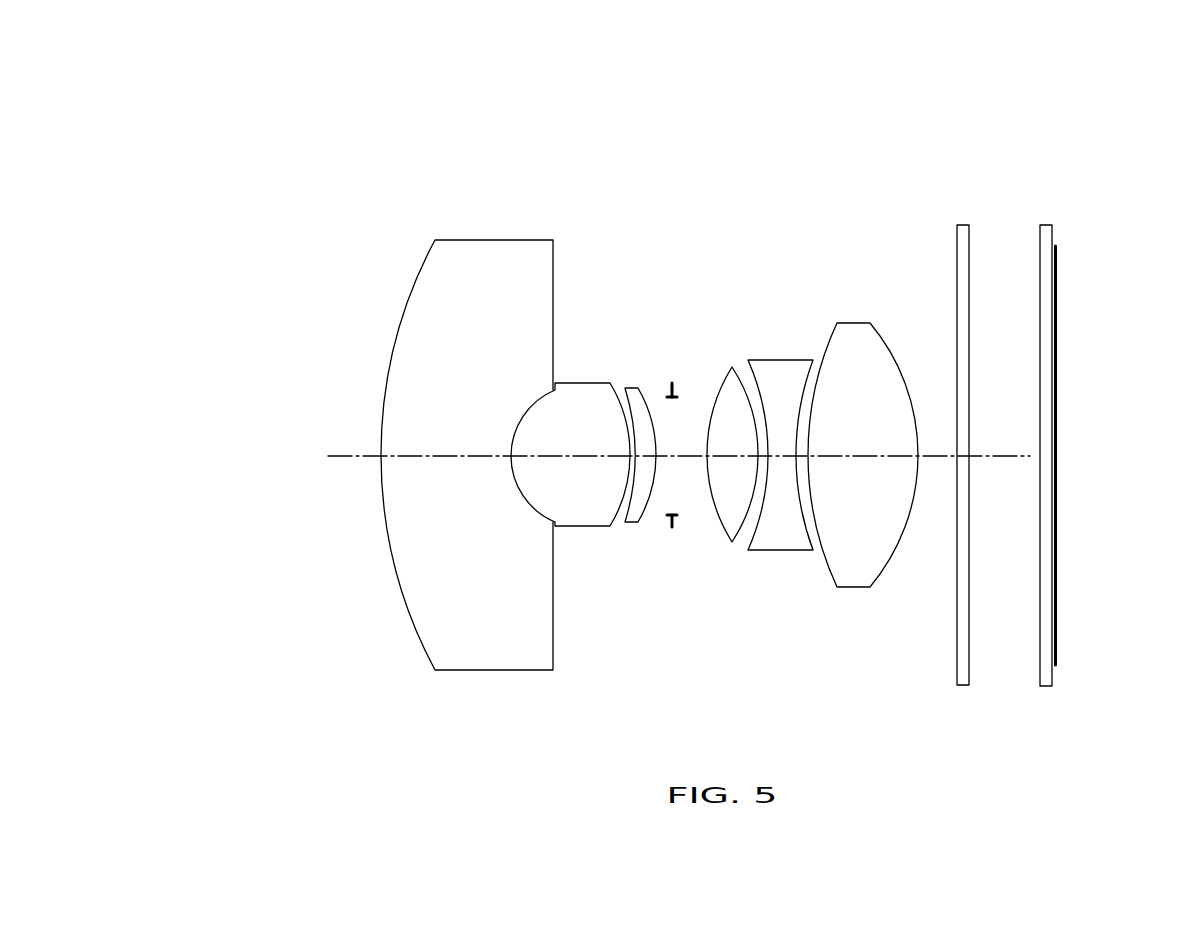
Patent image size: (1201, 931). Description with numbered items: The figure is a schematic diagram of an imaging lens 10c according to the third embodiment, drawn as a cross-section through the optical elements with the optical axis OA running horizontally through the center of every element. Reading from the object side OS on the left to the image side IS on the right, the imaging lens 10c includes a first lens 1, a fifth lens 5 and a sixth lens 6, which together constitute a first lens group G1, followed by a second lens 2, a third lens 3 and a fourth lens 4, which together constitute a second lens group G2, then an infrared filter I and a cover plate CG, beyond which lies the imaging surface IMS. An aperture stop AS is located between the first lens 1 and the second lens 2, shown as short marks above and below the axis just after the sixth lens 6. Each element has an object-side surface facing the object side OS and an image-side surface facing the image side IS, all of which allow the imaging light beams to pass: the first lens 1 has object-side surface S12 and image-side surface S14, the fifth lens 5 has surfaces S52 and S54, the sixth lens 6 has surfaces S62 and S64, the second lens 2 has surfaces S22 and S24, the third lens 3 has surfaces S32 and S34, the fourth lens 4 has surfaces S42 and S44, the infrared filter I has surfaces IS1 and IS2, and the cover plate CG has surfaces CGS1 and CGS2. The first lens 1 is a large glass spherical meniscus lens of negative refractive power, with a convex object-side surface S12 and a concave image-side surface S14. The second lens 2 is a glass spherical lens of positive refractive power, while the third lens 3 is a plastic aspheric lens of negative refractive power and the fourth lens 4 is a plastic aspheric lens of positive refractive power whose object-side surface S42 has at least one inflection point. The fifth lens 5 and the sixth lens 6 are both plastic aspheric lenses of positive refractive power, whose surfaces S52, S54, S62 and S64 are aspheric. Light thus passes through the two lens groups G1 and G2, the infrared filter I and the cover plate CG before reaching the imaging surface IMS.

The imaging lens 10c is at (262, 92).
The object side OS is at (262, 186).
The image side IS is at (1170, 186).
The first lens group G1 is at (375, 55).
The second lens group G2 is at (375, 143).
The optical axis OA is at (354, 454).
The first lens 1 is at (500, 239).
The second lens 2 is at (731, 366).
The third lens 3 is at (782, 359).
The fourth lens 4 is at (853, 322).
The fifth lens 5 is at (583, 382).
The sixth lens 6 is at (632, 387).
The aperture stop AS is at (672, 382).
The object-side surface of the first lens S12 is at (423, 648).
The image-side surface of the first lens S14 is at (553, 518).
The object-side surface of the second lens S22 is at (717, 518).
The image-side surface of the second lens S24 is at (733, 544).
The object-side surface of the third lens S32 is at (749, 549).
The image-side surface of the third lens S34 is at (812, 551).
The object-side surface of the fourth lens S42 is at (838, 564).
The image-side surface of the fourth lens S44 is at (892, 574).
The object-side surface of the fifth lens S52 is at (558, 522).
The image-side surface of the fifth lens S54 is at (608, 528).
The object-side surface of the sixth lens S62 is at (627, 524).
The image-side surface of the sixth lens S64 is at (640, 524).
The infrared filter I is at (963, 224).
The object-side surface of the infrared filter IS1 is at (956, 654).
The image-side surface of the infrared filter IS2 is at (970, 660).
The cover plate CG is at (1046, 224).
The object-side surface of the cover plate CGS1 is at (1040, 670).
The image-side surface of the cover plate CGS2 is at (1053, 672).
The imaging surface IMS is at (1057, 245).